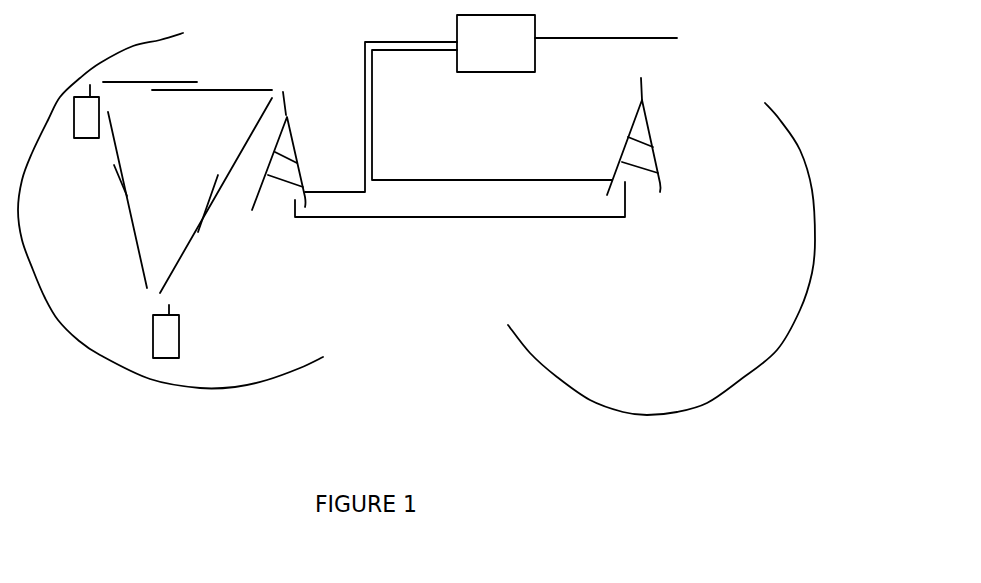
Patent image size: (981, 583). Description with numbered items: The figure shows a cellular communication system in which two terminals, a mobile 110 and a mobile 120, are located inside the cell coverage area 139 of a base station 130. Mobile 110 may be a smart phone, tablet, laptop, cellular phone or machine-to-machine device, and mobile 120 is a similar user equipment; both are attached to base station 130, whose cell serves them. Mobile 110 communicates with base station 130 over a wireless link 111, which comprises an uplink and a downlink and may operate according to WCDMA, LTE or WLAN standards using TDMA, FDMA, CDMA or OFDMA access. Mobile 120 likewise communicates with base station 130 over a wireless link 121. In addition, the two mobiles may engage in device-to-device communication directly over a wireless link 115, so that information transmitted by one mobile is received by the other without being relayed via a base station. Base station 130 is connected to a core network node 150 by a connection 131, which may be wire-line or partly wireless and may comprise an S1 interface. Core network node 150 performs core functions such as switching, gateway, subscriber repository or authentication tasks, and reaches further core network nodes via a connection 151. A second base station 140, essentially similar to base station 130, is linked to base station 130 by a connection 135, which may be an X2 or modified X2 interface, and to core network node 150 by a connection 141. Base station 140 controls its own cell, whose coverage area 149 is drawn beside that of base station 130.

The mobile 110 is at (165, 342).
The wireless link 111 is at (216, 195).
The wireless link 115 is at (121, 200).
The mobile 120 is at (86, 123).
The wireless link 121 is at (187, 83).
The base station 130 is at (279, 152).
The connection 131 is at (381, 117).
The connection 135 is at (460, 209).
The cell coverage area 139 is at (170, 211).
The base station 140 is at (634, 138).
The connection 141 is at (492, 115).
The coverage area 149 is at (661, 259).
The core network node 150 is at (496, 43).
The connection 151 is at (606, 30).